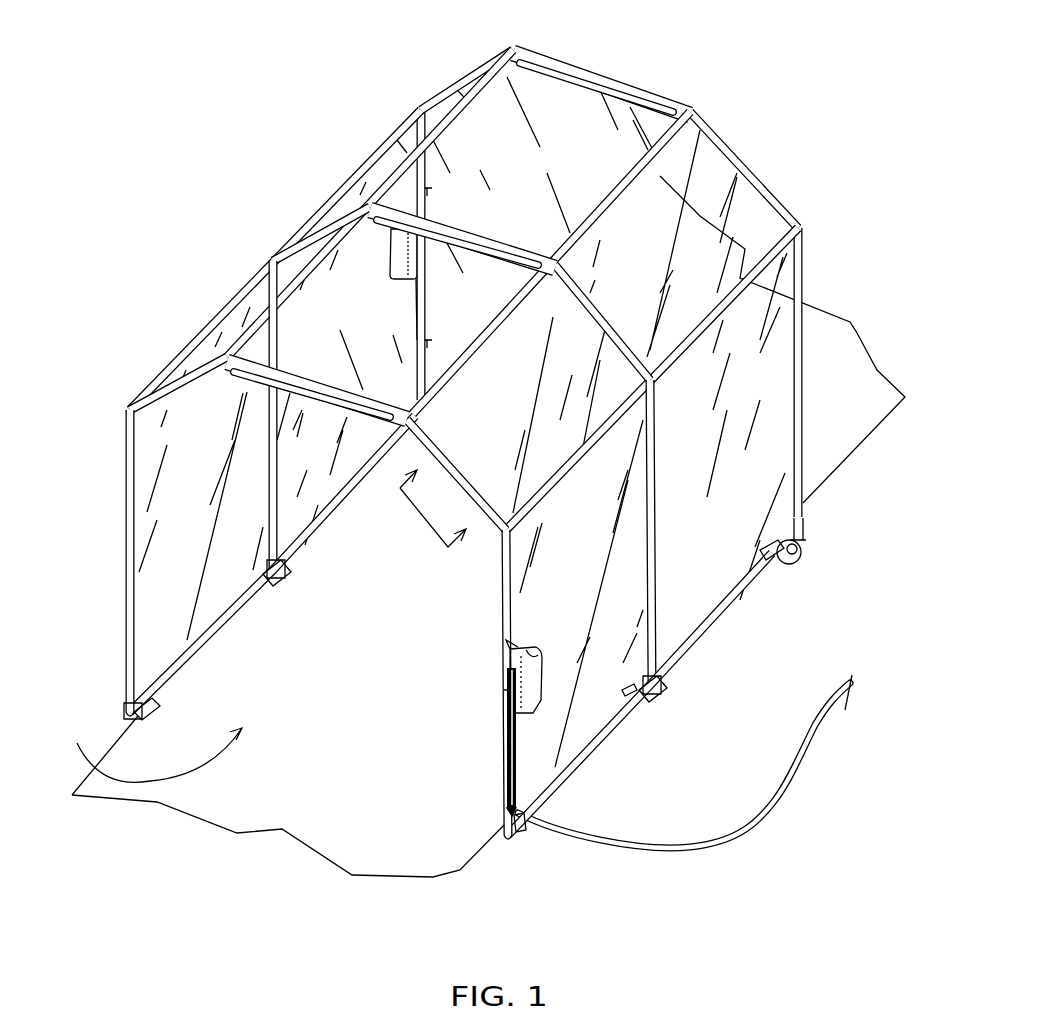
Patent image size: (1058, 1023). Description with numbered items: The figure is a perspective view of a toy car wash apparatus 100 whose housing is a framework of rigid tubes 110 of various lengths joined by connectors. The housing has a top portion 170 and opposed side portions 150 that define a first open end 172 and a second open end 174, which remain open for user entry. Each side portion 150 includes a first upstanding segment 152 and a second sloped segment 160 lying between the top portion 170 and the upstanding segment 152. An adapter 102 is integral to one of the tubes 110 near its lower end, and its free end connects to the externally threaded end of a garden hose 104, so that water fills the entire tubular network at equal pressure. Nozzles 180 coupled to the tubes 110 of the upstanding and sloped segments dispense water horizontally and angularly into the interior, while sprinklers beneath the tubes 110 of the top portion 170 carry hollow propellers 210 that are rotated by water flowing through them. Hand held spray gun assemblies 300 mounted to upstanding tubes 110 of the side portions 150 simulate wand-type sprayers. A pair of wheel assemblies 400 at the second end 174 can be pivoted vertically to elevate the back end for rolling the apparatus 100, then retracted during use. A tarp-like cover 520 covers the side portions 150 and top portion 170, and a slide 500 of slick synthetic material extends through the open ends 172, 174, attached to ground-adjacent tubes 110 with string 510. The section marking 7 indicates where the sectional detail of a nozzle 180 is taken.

The toy car wash apparatus 100 is at (189, 131).
The adapter 102 is at (518, 820).
The garden hose 104 is at (695, 850).
The rigid tube 110 is at (127, 598).
The side portion 150 is at (92, 419).
The first upstanding segment 152 is at (160, 543).
The second sloped segment 160 is at (440, 54).
The top portion 170 is at (650, 61).
The first open end 172 is at (150, 745).
The second open end 174 is at (838, 372).
The nozzle 180 is at (503, 748).
The hollow propeller 210 is at (563, 80).
The hand held spray gun assembly 300 is at (483, 681).
The wheel assembly 400 is at (800, 553).
The slide 500 is at (380, 862).
The string 510 is at (285, 570).
The tarp-like cover 520 is at (217, 438).
The section line 7- 7 is at (423, 526).